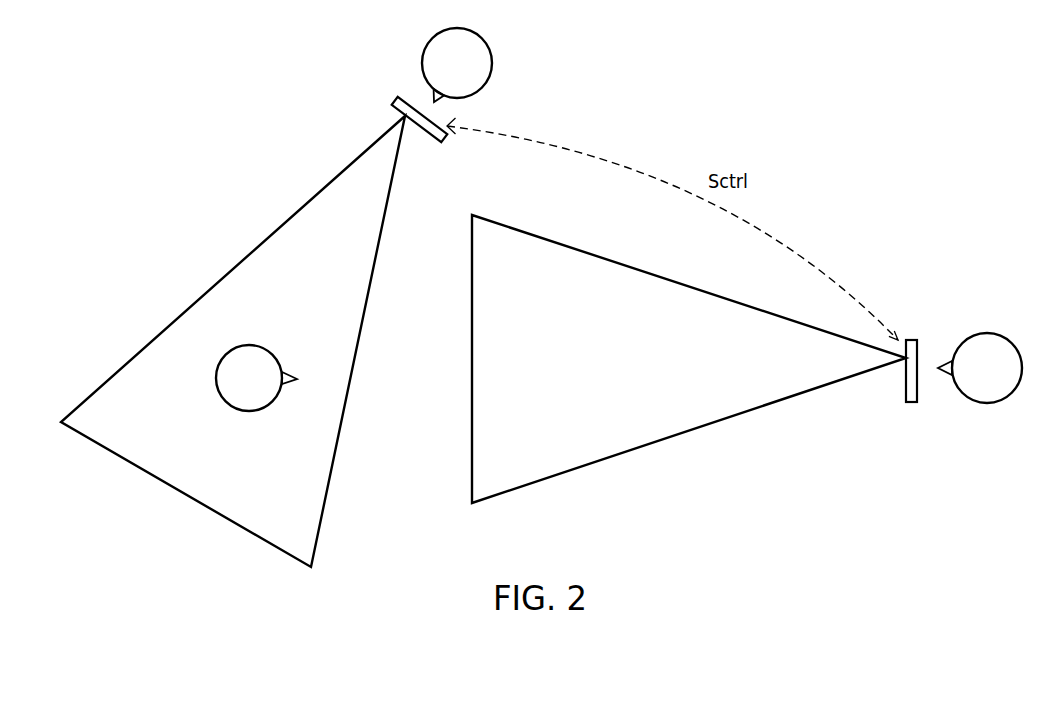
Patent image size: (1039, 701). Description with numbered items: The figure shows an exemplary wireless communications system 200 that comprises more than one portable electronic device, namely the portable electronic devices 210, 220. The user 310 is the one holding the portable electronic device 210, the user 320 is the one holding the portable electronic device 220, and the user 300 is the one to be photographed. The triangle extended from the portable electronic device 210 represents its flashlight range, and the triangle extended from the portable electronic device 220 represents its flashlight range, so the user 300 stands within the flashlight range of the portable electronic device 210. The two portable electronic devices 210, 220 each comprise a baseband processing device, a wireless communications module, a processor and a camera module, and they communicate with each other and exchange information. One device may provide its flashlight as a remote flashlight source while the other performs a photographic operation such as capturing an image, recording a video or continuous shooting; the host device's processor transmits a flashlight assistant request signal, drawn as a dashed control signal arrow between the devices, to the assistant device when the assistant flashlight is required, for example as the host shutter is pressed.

The wireless communications system 200 is at (130, 70).
The portable electronic device 210 is at (393, 103).
The portable electronic device 220 is at (908, 403).
The user 300 is at (249, 400).
The user 310 is at (480, 63).
The user 320 is at (985, 343).